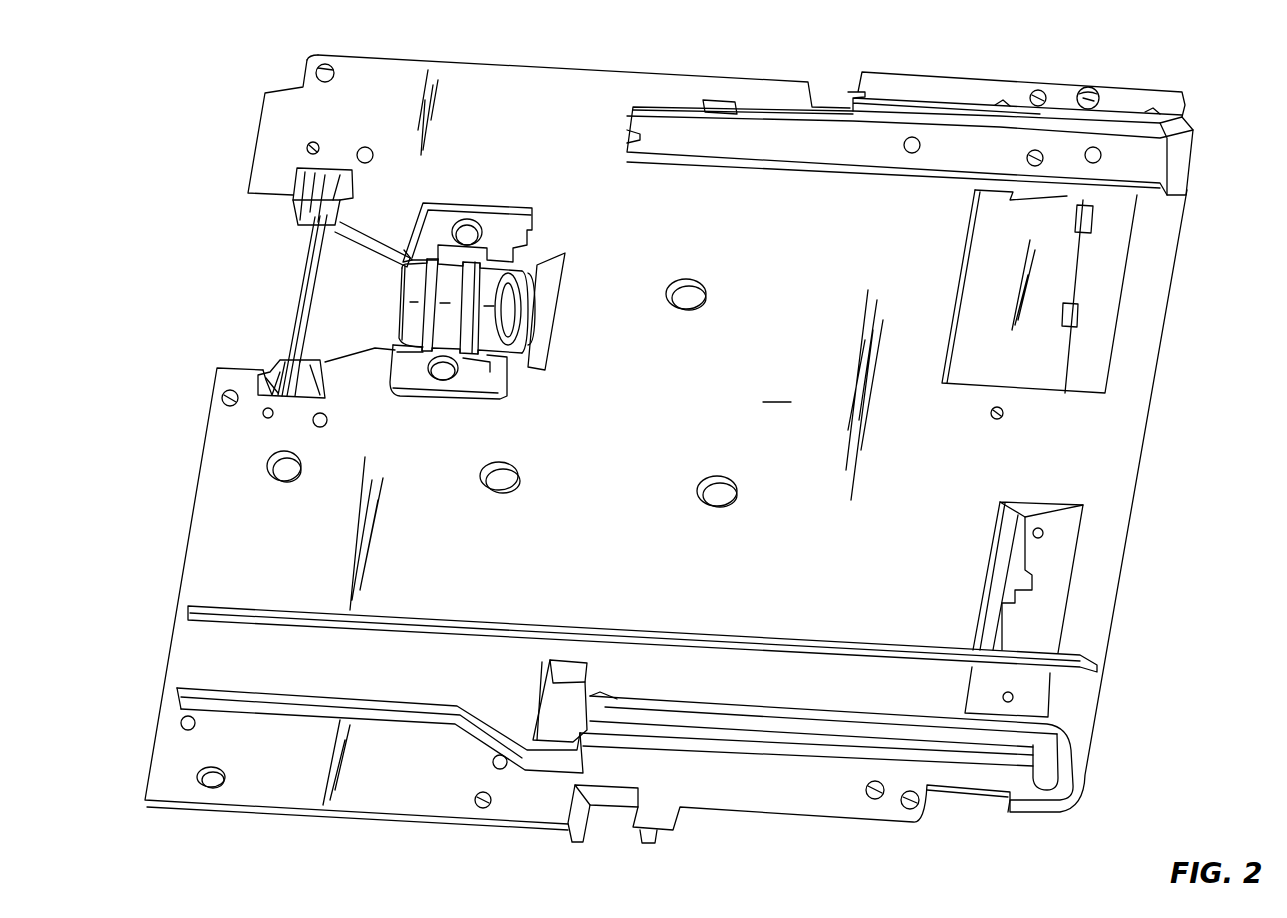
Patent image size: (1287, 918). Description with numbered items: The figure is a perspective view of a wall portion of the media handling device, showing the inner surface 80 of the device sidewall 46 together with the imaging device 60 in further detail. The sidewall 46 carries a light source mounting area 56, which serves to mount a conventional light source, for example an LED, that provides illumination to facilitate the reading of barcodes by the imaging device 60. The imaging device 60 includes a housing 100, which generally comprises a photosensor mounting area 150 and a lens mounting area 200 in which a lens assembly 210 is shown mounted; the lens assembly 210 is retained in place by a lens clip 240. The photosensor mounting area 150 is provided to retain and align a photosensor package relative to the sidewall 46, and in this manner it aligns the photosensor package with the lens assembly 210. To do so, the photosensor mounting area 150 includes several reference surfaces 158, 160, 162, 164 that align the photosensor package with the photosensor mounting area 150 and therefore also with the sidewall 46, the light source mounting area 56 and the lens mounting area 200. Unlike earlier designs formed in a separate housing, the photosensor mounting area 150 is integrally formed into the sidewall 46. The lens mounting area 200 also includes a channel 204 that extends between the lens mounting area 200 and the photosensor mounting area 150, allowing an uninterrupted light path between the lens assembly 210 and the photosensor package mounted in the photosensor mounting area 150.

The sidewall 46 is at (724, 54).
The light source mounting area 56 is at (1045, 410).
The imaging device 60 is at (404, 238).
The inner surface 80 is at (666, 449).
The housing 100 is at (479, 310).
The photosensor mounting area 150 is at (268, 276).
The reference surface 158 is at (296, 206).
The reference surface 160 is at (270, 370).
The reference surface 162 is at (315, 238).
The reference surface 164 is at (286, 356).
The lens mounting area 200 is at (525, 384).
The channel 204 is at (355, 330).
The lens assembly 210 is at (520, 258).
The lens clip 240 is at (498, 212).